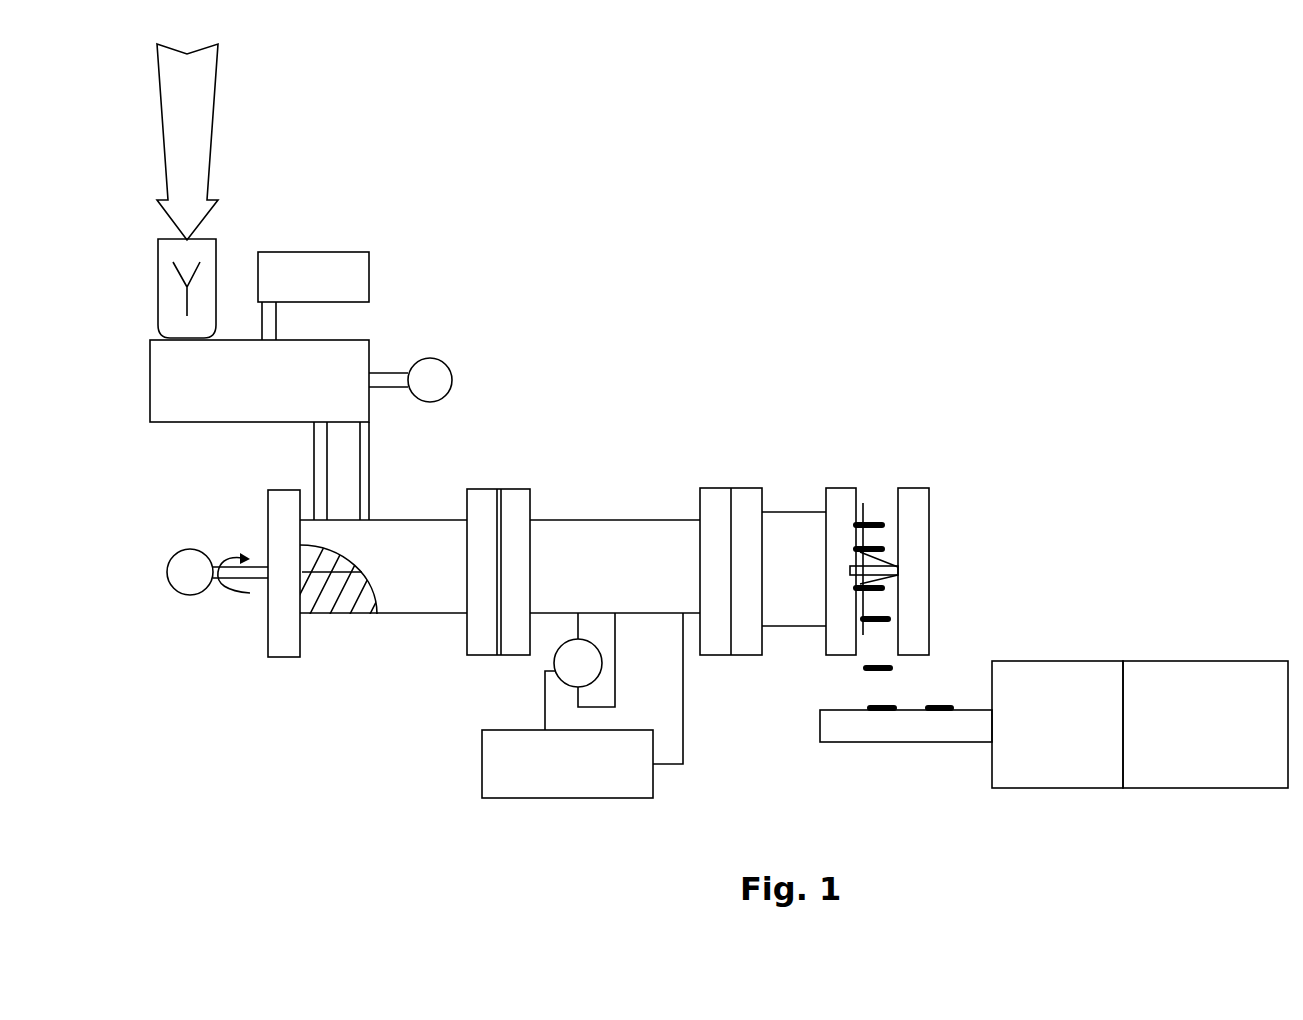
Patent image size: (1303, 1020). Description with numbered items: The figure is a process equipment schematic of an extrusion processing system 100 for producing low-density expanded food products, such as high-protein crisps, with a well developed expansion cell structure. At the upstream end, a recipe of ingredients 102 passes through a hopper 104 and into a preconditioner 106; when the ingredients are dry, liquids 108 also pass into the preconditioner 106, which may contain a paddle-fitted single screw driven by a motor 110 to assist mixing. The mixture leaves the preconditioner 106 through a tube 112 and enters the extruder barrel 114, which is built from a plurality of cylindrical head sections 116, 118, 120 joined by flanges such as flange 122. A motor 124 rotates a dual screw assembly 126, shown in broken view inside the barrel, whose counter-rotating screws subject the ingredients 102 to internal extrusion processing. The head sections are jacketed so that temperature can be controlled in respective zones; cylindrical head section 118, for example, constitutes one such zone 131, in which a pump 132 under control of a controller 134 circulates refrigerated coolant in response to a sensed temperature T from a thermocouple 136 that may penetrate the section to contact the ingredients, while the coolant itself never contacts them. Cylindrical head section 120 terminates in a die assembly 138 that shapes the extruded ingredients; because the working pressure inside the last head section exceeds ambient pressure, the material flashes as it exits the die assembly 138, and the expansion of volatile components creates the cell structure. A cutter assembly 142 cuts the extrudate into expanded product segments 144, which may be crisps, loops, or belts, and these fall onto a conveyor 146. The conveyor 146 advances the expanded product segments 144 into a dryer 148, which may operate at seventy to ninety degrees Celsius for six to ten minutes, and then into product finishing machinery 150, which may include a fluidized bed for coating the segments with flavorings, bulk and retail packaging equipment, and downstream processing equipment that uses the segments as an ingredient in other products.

The extrusion processing system 100 is at (552, 176).
The ingredients 102 is at (216, 89).
The hopper 104 is at (216, 262).
The preconditioner 106 is at (364, 338).
The liquids 108 is at (347, 252).
The motor 110 is at (455, 378).
The tube 112 is at (370, 440).
The extruder barrel 114 is at (600, 414).
The cylindrical head section 116 is at (437, 520).
The cylindrical head section 118 is at (616, 519).
The cylindrical head section 120 is at (795, 512).
The flange 122 is at (530, 489).
The motor 124 is at (186, 547).
The dual screw assembly 126 is at (331, 628).
The zone 131 is at (614, 566).
The pump 132 is at (558, 652).
The controller 134 is at (482, 765).
The thermocouple 136 is at (683, 640).
The die assembly 138 is at (840, 487).
The cutter assembly 142 is at (918, 483).
The expanded product segments 144 is at (938, 684).
The conveyor 146 is at (847, 708).
The dryer 148 is at (1092, 660).
The product finishing machinery 150 is at (1206, 660).